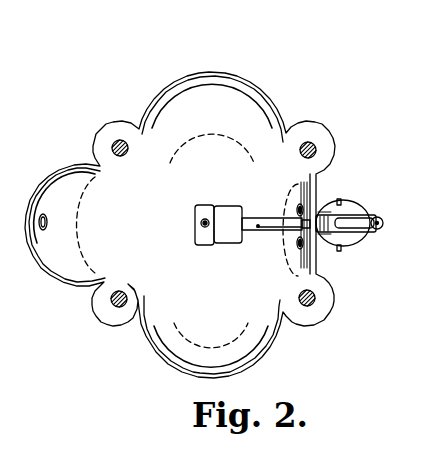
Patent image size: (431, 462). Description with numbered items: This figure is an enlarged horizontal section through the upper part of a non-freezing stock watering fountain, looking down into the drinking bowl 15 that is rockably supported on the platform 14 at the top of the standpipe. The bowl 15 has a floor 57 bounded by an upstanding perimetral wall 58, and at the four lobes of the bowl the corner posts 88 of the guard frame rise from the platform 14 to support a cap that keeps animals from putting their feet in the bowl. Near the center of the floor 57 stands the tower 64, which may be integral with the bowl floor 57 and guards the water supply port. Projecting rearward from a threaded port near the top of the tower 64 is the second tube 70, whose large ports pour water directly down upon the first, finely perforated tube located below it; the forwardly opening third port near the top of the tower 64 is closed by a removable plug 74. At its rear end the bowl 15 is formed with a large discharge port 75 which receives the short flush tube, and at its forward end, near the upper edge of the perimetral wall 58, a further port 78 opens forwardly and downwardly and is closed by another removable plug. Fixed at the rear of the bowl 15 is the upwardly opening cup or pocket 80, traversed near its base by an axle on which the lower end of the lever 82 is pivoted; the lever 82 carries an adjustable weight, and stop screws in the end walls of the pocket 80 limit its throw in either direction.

The platform 14 is at (122, 328).
The drinking bowl 15 is at (173, 65).
The bowl floor 57 is at (155, 223).
The perimetral wall 58 is at (176, 372).
The tower 64 is at (230, 220).
The second tube 70 is at (258, 228).
The removable plug 74 is at (201, 225).
The discharge port 75 is at (297, 245).
The port 78 is at (44, 216).
The cup or pocket 80 is at (349, 247).
The lever 82 is at (354, 222).
The corner posts 88 is at (121, 139).